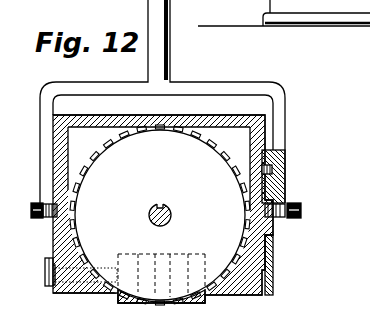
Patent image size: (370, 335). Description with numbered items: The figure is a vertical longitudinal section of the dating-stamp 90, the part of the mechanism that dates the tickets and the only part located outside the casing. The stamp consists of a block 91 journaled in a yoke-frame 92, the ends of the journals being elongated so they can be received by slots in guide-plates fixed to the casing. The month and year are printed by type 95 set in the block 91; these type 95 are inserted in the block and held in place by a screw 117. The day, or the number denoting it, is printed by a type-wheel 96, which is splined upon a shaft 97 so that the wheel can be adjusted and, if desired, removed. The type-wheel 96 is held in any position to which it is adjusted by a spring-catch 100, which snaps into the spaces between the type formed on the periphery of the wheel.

The stamp 90 is at (140, 204).
The block 91 is at (86, 290).
The yoke-frame 92 is at (162, 101).
The type 95 is at (161, 286).
The type-wheel 96 is at (160, 215).
The shaft 97 is at (170, 214).
The spring-catch 100 is at (242, 150).
The screw 117 is at (45, 275).